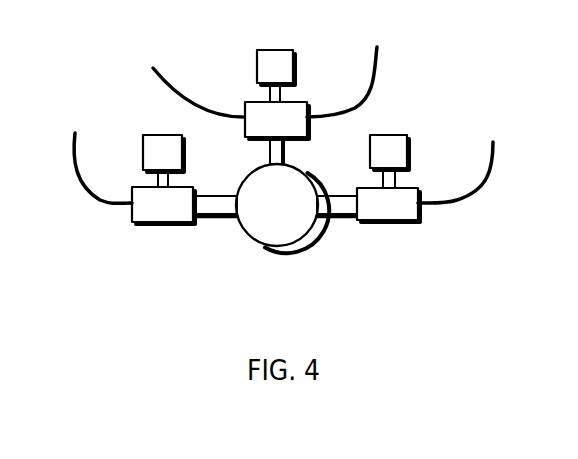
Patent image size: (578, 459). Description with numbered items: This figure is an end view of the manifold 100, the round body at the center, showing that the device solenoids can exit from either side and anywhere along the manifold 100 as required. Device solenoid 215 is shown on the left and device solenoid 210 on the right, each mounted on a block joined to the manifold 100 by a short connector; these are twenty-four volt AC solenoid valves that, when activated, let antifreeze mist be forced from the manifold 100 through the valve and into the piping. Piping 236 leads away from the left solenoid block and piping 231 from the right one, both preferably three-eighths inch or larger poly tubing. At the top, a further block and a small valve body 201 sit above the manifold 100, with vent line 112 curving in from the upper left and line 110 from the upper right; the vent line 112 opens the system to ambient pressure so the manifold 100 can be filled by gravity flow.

The manifold 100 is at (303, 235).
The top module 201 is at (283, 50).
The device solenoid 215 is at (145, 136).
The device solenoid 210 is at (390, 135).
The vent line 112 is at (167, 72).
The upper right arm 110 is at (378, 70).
The piping 236 is at (100, 202).
The piping 231 is at (493, 165).